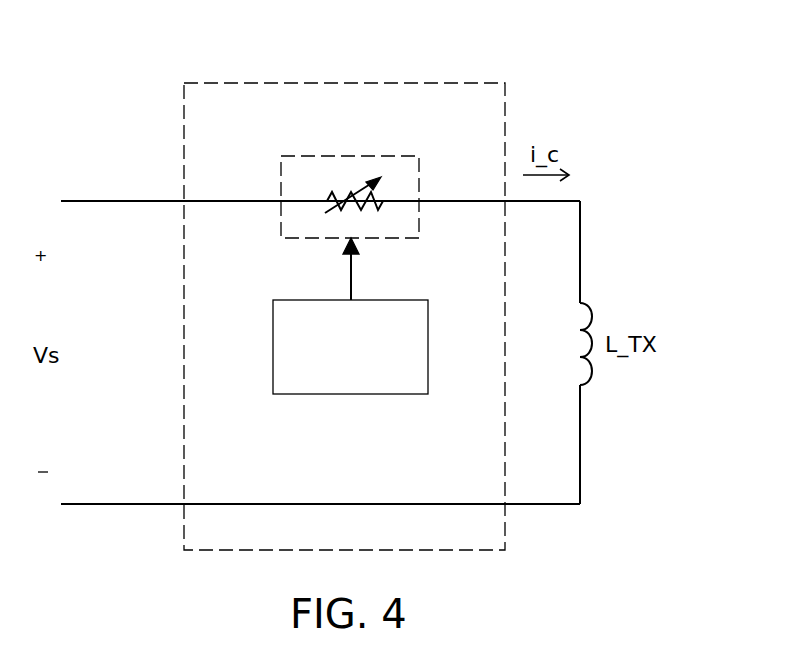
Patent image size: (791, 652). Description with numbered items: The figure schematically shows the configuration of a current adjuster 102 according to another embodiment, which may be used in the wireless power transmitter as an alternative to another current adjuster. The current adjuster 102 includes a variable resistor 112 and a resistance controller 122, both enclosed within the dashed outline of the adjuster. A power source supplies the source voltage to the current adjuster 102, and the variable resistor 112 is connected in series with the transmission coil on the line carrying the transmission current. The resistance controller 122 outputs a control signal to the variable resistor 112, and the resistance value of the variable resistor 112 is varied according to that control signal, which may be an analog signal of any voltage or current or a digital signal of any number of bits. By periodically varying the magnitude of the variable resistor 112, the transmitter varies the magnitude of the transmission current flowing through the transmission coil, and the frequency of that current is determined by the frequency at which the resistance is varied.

The current adjuster 102 is at (456, 83).
The variable resistor 112 is at (397, 156).
The resistance controller 122 is at (430, 345).